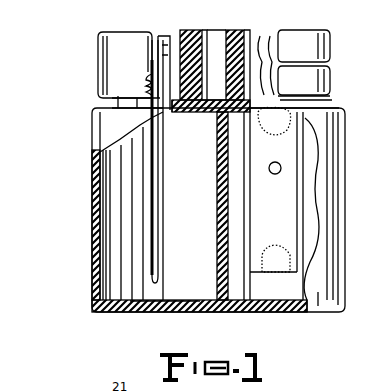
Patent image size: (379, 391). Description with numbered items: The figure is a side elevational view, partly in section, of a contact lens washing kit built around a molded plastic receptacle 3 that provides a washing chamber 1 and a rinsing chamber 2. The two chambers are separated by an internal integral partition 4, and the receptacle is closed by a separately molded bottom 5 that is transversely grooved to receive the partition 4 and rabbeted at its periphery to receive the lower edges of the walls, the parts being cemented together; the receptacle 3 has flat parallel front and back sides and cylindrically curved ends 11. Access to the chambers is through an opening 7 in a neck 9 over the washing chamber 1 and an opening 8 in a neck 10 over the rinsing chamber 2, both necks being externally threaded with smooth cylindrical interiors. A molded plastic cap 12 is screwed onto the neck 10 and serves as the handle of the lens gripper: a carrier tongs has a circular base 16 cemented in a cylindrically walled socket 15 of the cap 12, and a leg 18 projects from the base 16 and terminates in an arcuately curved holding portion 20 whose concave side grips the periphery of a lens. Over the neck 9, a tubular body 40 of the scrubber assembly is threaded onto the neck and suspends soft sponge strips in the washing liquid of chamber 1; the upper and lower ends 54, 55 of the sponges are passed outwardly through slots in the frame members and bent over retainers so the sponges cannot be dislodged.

The washing chamber 1 is at (331, 173).
The rinsing chamber 2 is at (100, 179).
The receptacle 3 is at (213, 210).
The partition 4 is at (215, 217).
The bottom 5 is at (135, 318).
The opening 7 is at (250, 112).
The opening 8 is at (176, 115).
The neck 9 is at (318, 101).
The neck 10 is at (100, 107).
The cylindrically curved ends 11 is at (92, 280).
The cap 12 is at (113, 57).
The cylindrically walled socket 15 is at (178, 40).
The circular base 16 is at (163, 38).
The leg 18 is at (164, 168).
The holding portion 20 is at (160, 270).
The tubular body 40 is at (331, 68).
The upper end of sponge 54 is at (274, 141).
The lower end of sponge 55 is at (266, 246).